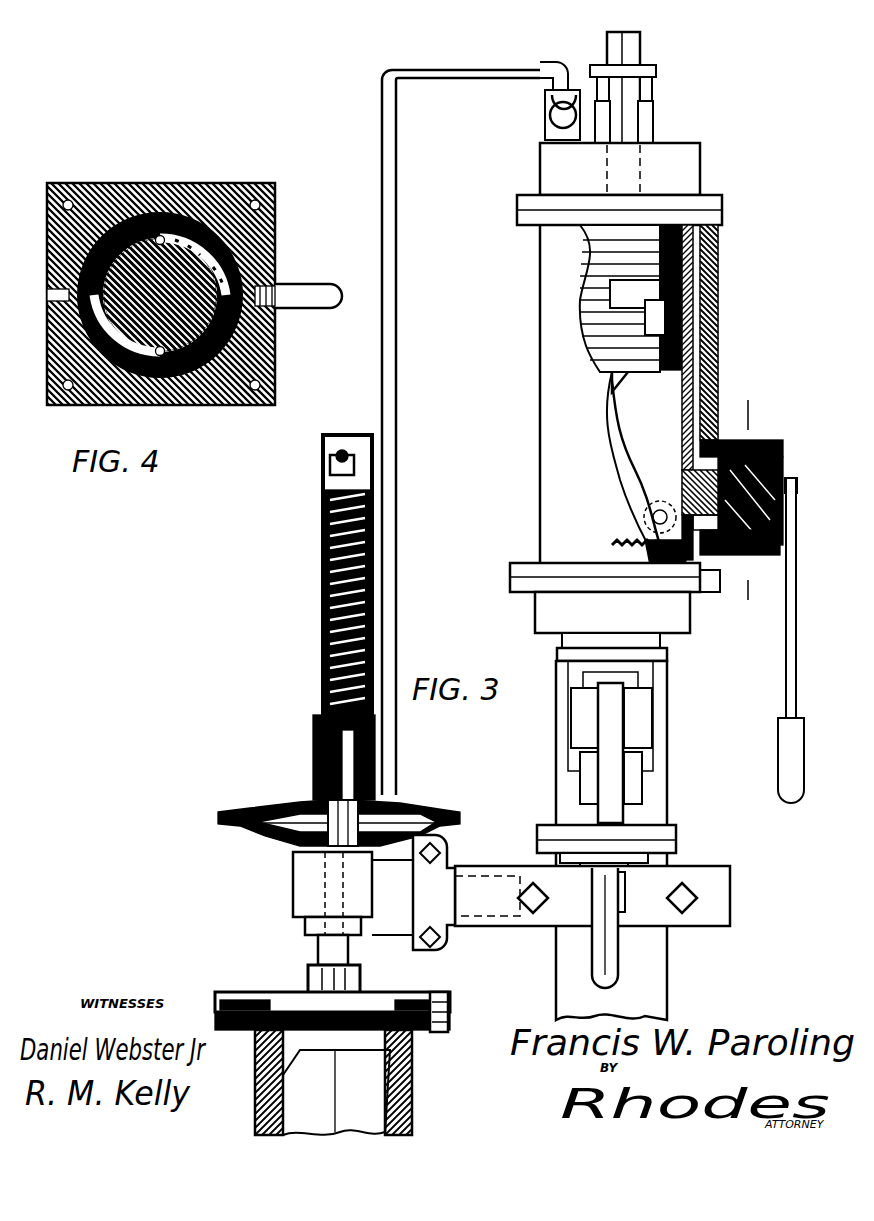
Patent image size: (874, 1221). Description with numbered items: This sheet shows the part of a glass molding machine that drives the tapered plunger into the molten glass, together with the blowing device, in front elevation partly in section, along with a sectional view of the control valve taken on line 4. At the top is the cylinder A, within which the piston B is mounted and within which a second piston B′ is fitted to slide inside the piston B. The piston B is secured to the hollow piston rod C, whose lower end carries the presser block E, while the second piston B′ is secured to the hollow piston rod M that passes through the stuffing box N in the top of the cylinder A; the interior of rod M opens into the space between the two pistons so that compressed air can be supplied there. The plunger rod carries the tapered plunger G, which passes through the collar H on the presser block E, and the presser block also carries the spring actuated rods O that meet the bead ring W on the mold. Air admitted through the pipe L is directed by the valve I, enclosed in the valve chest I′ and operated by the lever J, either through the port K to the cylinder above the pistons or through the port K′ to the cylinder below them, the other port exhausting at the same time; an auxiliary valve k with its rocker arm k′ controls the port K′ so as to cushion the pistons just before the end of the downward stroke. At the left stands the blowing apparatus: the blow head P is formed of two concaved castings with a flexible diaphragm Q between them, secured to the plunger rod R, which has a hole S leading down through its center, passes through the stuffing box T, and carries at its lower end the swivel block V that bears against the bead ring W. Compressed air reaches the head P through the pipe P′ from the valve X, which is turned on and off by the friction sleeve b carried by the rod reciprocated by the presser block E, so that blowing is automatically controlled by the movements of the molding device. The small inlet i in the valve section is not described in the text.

In FIG. 3, the cylinder A is at (561, 394).
In FIG. 3, the piston B is at (622, 298).
In FIG. 3, the second piston B′ is at (650, 200).
In FIG. 3, the hollow piston rod C is at (622, 395).
In FIG. 3, the presser block E is at (612, 806).
In FIG. 3, the tapered plunger G is at (615, 928).
In FIG. 3, the collar H is at (676, 845).
In FIG. 3, the valve I is at (778, 470).
In FIG. 4, the valve chest I′ is at (240, 245).
In FIG. 3, the lever J is at (798, 640).
In FIG. 3, the port K is at (705, 352).
In FIG. 4, the port K′ is at (178, 205).
In FIG. 4, the pipe L is at (298, 283).
In FIG. 3, the hollow piston rod M is at (624, 72).
In FIG. 3, the stuffing box N is at (660, 143).
In FIG. 3, the spring actuated rods O is at (592, 896).
In FIG. 3, the blow head P is at (339, 817).
In FIG. 3, the pipe P′ is at (475, 428).
In FIG. 3, the flexible diaphragm Q is at (300, 803).
In FIG. 3, the plunger rod R is at (295, 845).
In FIG. 3, the hole S is at (318, 800).
In FIG. 3, the stuffing box T is at (313, 748).
In FIG. 3, the swivel block V is at (323, 640).
In FIG. 3, the bead ring W is at (298, 972).
In FIG. 3, the valve X is at (545, 115).
In FIG. 3, the friction sleeve b is at (656, 76).
In FIG. 4, the inlet i is at (47, 293).
In FIG. 3, the auxiliary valve k is at (700, 590).
In FIG. 3, the rocker arm k′ is at (648, 505).
In FIG. 3, the section line 4 is at (738, 498).